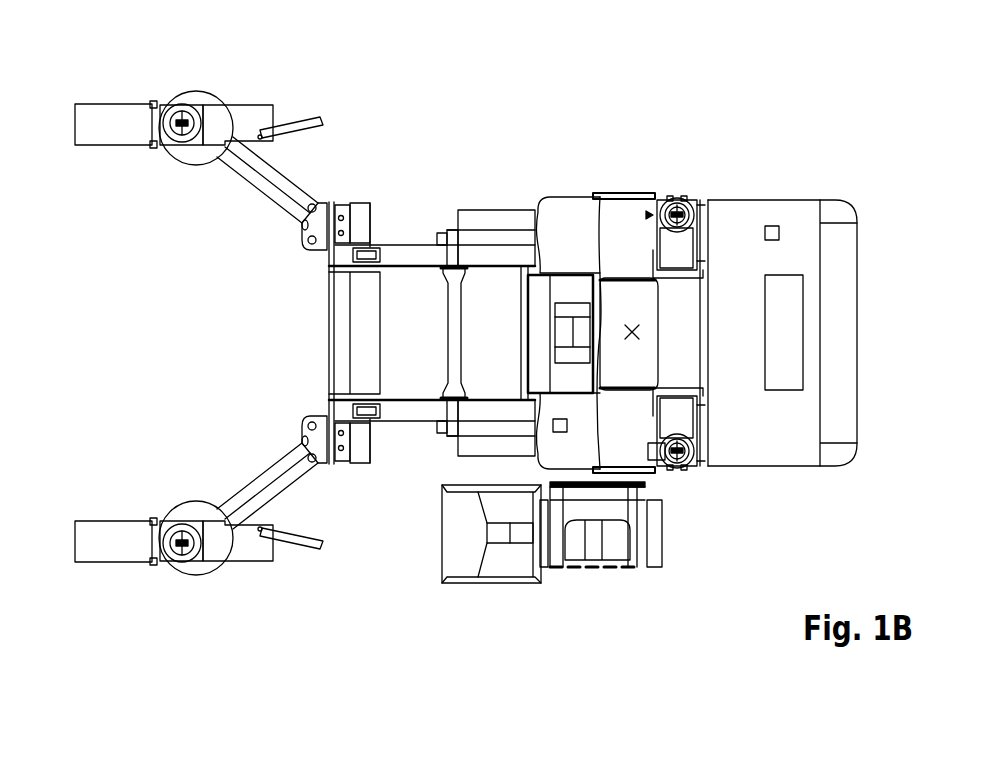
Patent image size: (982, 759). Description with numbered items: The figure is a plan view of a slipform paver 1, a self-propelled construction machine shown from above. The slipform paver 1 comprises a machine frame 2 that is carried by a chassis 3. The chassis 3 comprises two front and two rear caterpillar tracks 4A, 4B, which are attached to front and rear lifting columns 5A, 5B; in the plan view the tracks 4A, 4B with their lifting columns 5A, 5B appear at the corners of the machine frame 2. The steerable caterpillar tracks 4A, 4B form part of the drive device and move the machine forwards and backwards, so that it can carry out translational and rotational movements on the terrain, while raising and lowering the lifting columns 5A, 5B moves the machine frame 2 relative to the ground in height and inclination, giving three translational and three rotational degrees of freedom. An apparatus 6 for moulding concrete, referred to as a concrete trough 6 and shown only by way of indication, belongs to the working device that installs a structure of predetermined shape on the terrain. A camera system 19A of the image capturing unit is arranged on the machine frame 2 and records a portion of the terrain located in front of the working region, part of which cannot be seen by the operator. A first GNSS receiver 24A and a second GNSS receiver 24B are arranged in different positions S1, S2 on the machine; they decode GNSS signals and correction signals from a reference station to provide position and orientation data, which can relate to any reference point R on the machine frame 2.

The slipform paver 1 is at (496, 106).
The machine frame 2 is at (428, 194).
The chassis 3 is at (637, 178).
The front caterpillar tracks 4A is at (255, 104).
The front lifting columns 5A is at (175, 108).
The rear caterpillar tracks 4B is at (700, 194).
The rear lifting columns 5B is at (663, 196).
The concrete trough 6 is at (450, 536).
The camera system 19A is at (657, 462).
The first GNSS receiver 24A is at (561, 432).
The second GNSS receiver 24B is at (780, 234).
The first position S1 is at (552, 420).
The second position S2 is at (773, 225).
The reference point R is at (637, 328).